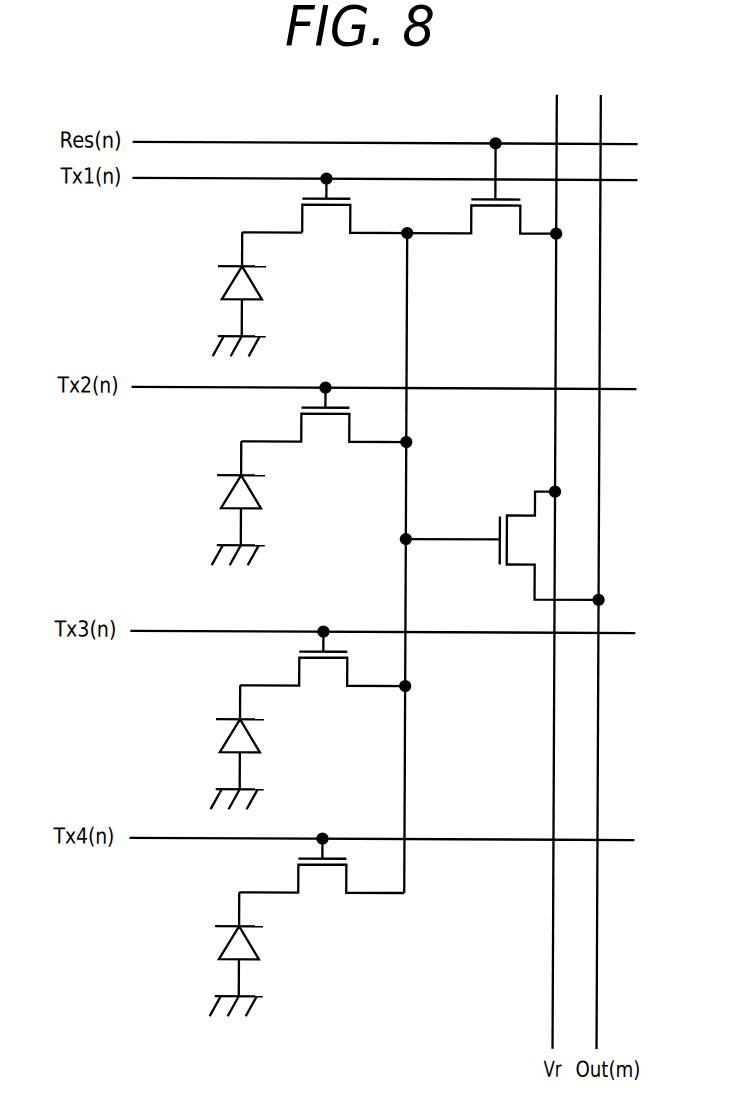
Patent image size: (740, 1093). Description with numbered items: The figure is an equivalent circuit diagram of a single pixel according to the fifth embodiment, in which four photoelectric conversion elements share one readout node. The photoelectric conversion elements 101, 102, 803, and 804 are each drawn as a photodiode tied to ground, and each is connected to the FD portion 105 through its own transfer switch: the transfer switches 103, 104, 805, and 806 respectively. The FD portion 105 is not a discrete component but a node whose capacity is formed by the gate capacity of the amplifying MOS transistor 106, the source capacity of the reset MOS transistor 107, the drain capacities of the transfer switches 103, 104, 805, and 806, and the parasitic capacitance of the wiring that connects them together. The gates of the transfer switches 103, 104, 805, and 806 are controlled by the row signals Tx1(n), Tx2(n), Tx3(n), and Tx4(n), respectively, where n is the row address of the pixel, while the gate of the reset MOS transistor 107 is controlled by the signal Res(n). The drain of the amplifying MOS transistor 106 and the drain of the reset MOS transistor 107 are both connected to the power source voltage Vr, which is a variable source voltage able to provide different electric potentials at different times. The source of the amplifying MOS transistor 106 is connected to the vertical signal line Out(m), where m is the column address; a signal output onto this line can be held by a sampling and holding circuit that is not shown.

The photoelectric conversion element 101 is at (230, 280).
The photoelectric conversion element 102 is at (228, 491).
The transfer switch 103 is at (326, 222).
The transfer switch 104 is at (323, 435).
The FD portion 105 is at (404, 237).
The amplifying MOS transistor 106 is at (517, 512).
The reset MOS transistor 107 is at (492, 222).
The photoelectric conversion element 803 is at (227, 733).
The photoelectric conversion element 804 is at (227, 941).
The transfer switch 805 is at (321, 680).
The transfer switch 806 is at (321, 888).